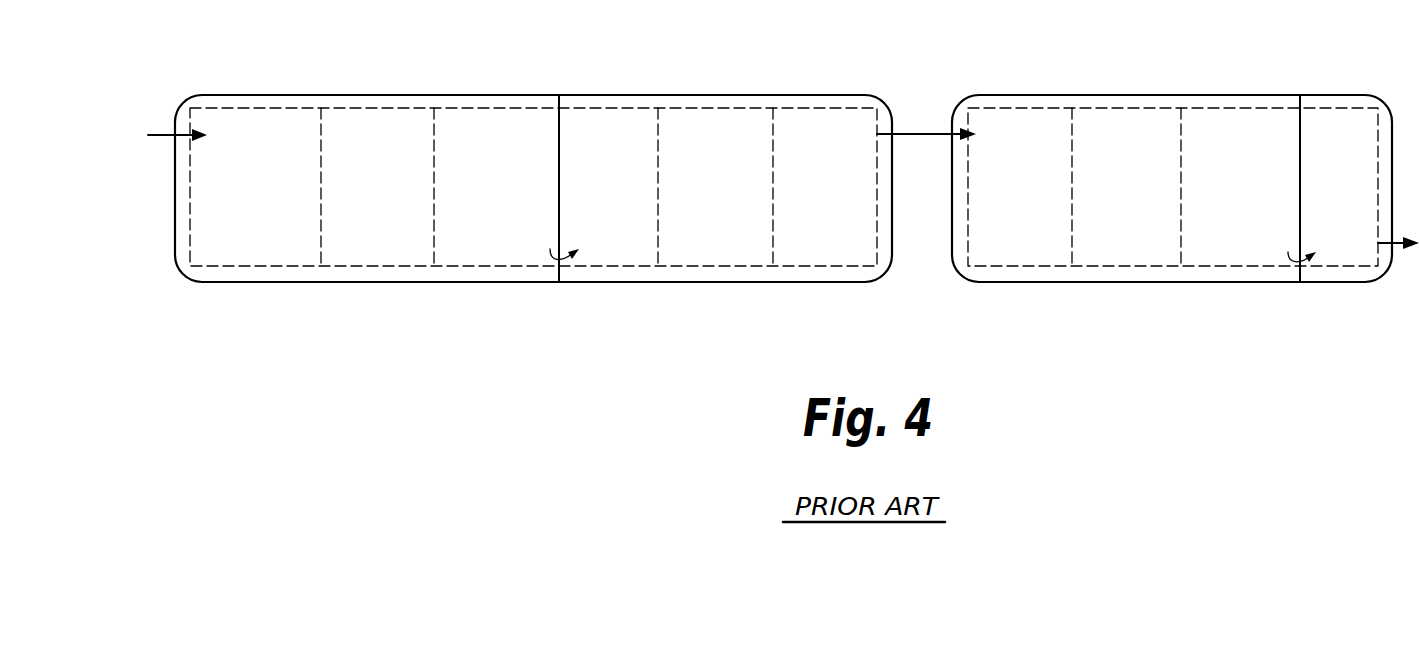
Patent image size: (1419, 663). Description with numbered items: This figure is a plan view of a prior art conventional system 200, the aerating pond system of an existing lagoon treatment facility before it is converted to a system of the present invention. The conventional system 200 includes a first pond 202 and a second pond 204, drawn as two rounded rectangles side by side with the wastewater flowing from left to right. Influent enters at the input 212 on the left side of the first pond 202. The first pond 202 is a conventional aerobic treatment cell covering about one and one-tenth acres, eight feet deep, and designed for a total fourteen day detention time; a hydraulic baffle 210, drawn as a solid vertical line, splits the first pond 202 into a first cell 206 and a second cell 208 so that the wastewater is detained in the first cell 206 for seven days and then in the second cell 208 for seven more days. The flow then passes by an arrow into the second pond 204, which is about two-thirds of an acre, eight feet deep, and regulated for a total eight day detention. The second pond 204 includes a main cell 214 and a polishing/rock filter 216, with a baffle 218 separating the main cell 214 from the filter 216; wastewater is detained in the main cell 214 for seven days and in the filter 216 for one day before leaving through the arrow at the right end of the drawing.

The conventional system 200 is at (741, 54).
The first pond 202 is at (499, 90).
The second pond 204 is at (1130, 88).
The first cell 206 is at (360, 253).
The second cell 208 is at (723, 250).
The hydraulic baffle 210 is at (559, 228).
The input 212 is at (159, 132).
The main cell 214 is at (1118, 243).
The polishing/rock filter 216 is at (1340, 248).
The baffle 218 is at (1300, 219).